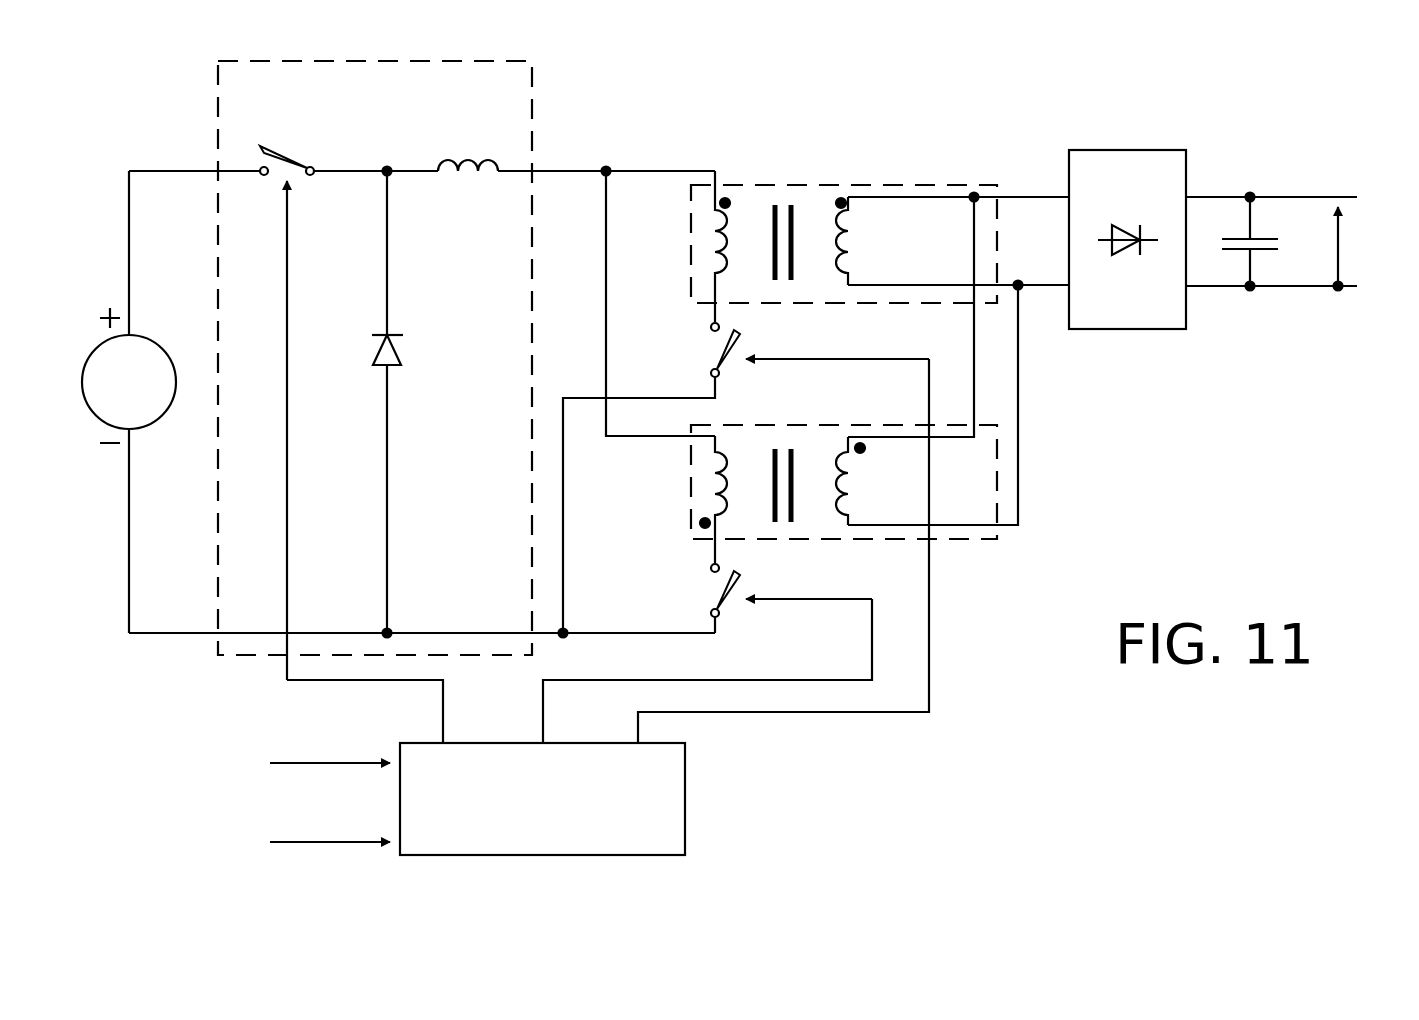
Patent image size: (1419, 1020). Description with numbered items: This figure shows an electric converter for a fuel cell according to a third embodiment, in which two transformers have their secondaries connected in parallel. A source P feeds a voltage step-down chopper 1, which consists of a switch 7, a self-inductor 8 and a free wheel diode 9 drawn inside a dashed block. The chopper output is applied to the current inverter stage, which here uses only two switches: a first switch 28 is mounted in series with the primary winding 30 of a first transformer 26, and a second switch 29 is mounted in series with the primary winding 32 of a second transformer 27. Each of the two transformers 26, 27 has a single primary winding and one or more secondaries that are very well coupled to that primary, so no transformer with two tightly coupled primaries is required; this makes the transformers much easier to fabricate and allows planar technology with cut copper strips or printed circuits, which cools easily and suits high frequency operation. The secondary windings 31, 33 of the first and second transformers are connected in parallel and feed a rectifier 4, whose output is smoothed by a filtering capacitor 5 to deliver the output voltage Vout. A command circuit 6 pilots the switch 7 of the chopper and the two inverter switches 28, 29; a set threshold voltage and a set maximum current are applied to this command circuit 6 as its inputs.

The voltage step-down chopper 1 is at (225, 195).
The rectifier 4 is at (1114, 153).
The filtering capacitor 5 is at (1265, 232).
The command circuit 6 is at (678, 805).
The switch 7 is at (297, 142).
The self-inductor 8 is at (462, 147).
The free wheel diode 9 is at (392, 355).
The first transformer 26 is at (848, 214).
The second transformer 27 is at (812, 521).
The first switch 28 is at (715, 352).
The second switch 29 is at (715, 590).
The primary winding of the first transformer 30 is at (722, 250).
The secondary winding of the first transformer 31 is at (843, 242).
The primary winding of the second transformer 32 is at (720, 487).
The secondary winding of the second transformer 33 is at (843, 488).
The power source P is at (143, 388).
The output voltage Vout is at (1372, 249).